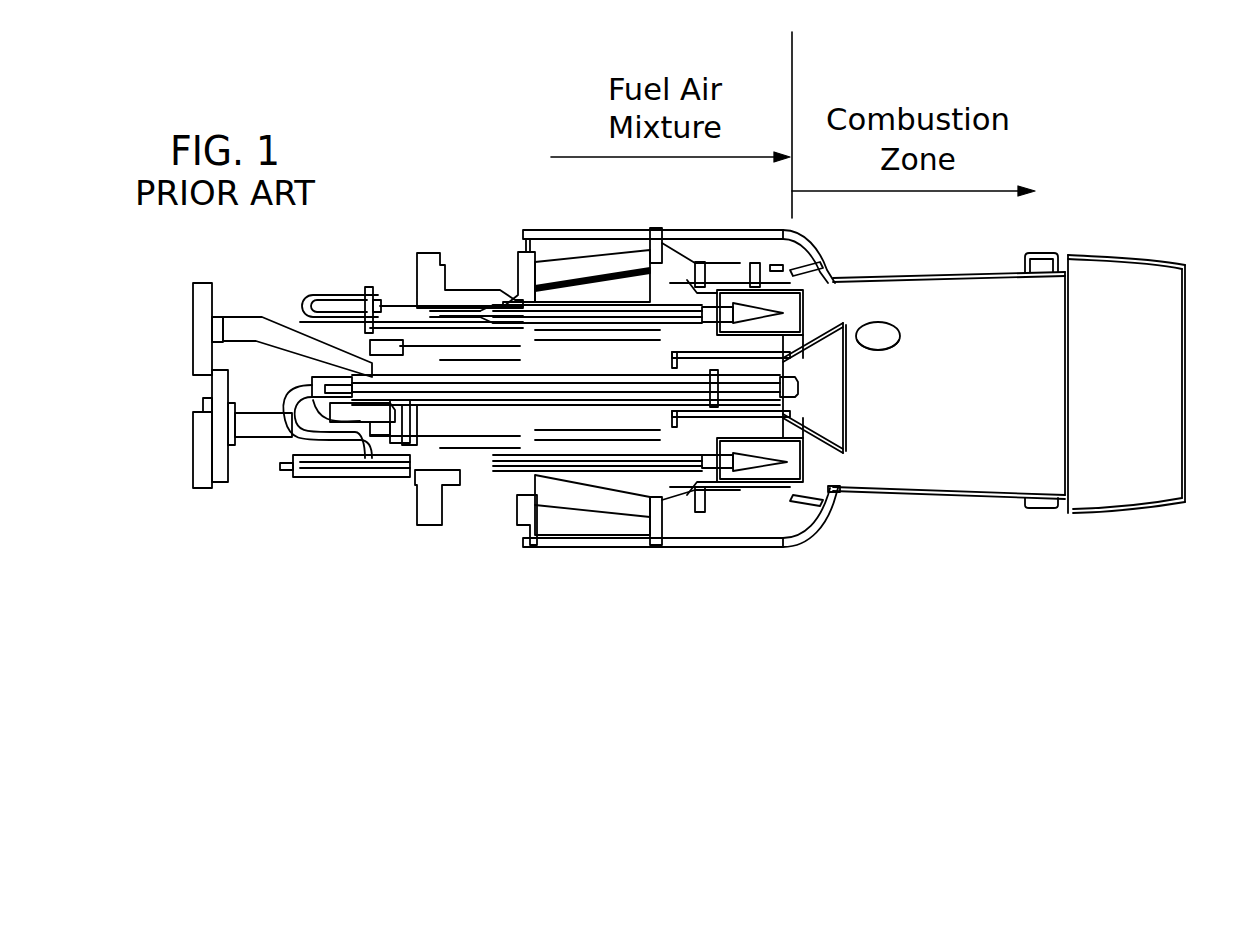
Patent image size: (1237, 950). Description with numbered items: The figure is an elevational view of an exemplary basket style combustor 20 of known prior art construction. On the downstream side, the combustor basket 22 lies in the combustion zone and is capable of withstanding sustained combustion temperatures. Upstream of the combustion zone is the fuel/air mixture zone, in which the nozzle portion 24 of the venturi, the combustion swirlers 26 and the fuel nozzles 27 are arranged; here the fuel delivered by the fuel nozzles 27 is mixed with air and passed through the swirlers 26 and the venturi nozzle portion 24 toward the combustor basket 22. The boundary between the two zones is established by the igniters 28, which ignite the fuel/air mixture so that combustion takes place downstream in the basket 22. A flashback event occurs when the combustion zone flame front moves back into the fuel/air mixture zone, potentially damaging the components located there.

The basket style combustor 20 is at (438, 602).
The combustor basket 22 is at (992, 233).
The nozzle portion of the venturi 24 is at (822, 403).
The combustion swirlers 26 is at (783, 312).
The fuel nozzles 27 is at (743, 305).
The igniters 28 is at (840, 486).